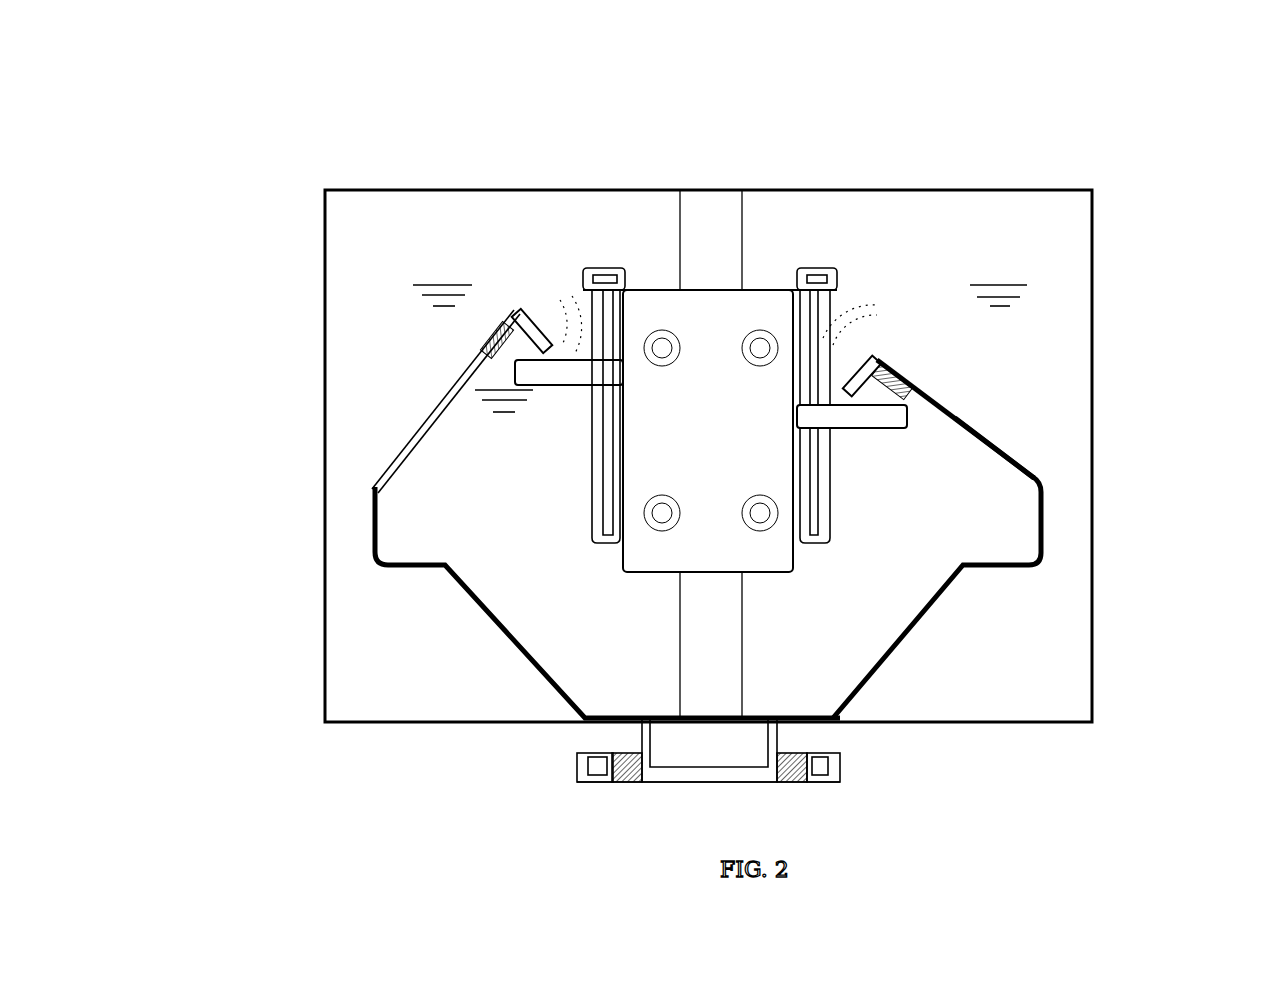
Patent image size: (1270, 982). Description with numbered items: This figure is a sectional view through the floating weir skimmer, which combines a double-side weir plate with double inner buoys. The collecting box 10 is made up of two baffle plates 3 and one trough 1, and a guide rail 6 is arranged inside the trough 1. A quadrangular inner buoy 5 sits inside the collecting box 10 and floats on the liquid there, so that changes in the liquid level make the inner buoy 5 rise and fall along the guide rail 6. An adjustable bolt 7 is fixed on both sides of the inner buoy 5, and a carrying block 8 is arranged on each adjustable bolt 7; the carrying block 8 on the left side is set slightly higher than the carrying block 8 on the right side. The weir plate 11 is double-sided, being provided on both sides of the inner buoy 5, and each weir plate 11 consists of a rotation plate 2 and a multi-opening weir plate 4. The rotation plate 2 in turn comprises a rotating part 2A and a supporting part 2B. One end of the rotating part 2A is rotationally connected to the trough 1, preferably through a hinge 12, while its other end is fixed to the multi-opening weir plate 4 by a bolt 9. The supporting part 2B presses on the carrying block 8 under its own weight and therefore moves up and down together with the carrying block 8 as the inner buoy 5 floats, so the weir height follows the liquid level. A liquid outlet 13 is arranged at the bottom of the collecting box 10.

The trough 1 is at (493, 396).
The rotation plate 2 is at (456, 284).
The rotating part 2A is at (362, 284).
The supporting part 2B is at (610, 230).
The baffle plate 3 is at (708, 398).
The multi-opening weir plate 4 is at (488, 216).
The inner buoy 5 is at (709, 323).
The guide rail 6 is at (724, 396).
The adjustable bolt 7 is at (761, 309).
The carrying block 8 is at (905, 251).
The bolt 9 is at (972, 237).
The collecting box 10 is at (1011, 294).
The weir plate 11 is at (1083, 276).
The hinge 12 is at (1051, 396).
The liquid outlet 13 is at (877, 670).